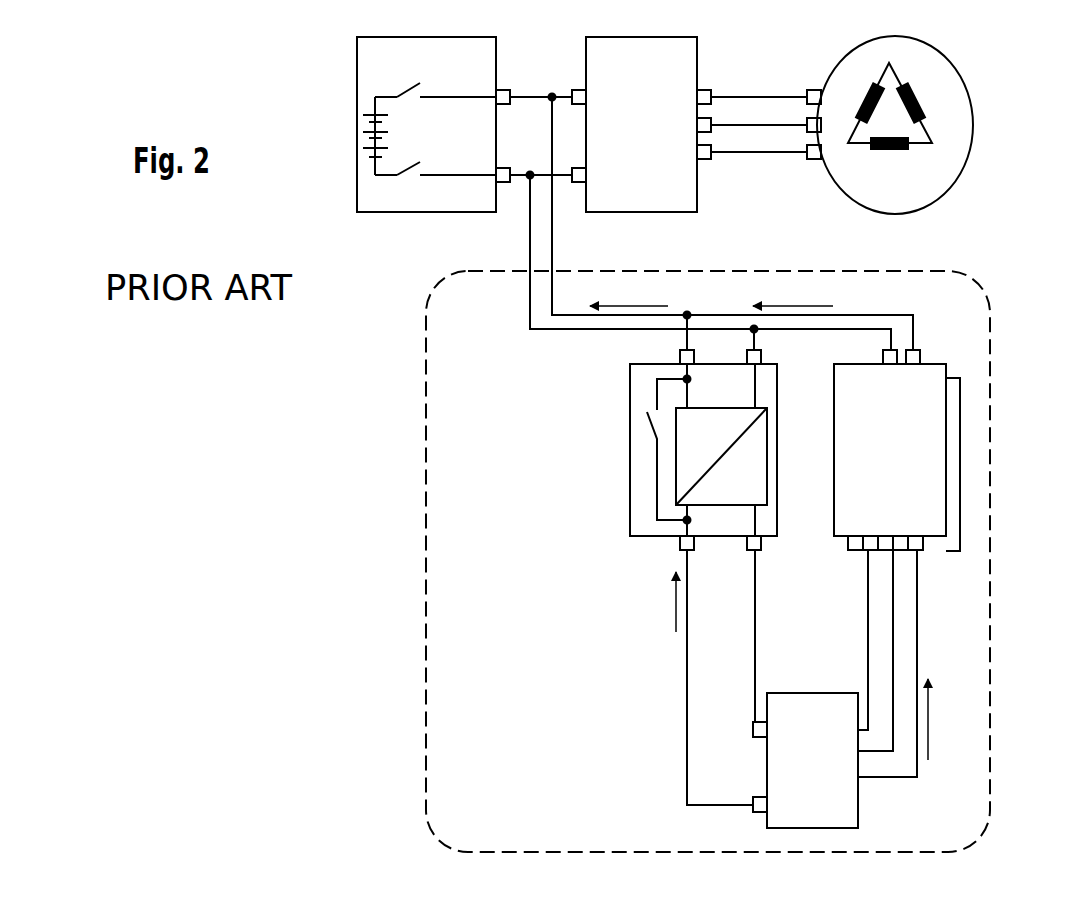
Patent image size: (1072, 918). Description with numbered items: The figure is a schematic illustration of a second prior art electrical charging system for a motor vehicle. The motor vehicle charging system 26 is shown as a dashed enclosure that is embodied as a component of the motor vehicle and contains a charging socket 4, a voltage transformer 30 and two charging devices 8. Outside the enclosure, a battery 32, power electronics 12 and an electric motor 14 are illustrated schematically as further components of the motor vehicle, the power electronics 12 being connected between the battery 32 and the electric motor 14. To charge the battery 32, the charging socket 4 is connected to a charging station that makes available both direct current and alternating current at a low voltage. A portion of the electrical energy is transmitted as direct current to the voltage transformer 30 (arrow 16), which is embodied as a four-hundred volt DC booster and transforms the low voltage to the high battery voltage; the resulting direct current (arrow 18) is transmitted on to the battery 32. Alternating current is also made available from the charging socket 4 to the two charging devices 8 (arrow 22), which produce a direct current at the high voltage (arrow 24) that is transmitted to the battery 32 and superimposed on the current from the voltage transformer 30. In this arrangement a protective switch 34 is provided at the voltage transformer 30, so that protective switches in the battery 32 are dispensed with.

The charging socket 4 is at (858, 812).
The charging devices 8 is at (834, 480).
The power electronics 12 is at (665, 212).
The electric motor 14 is at (957, 177).
The arrow 16 is at (676, 598).
The arrow 18 is at (628, 306).
The arrow 22 is at (928, 708).
The arrow 24 is at (790, 300).
The motor vehicle charging system 26 is at (947, 271).
The voltage transformer 30 is at (630, 510).
The battery 32 is at (378, 212).
The protective switch 34 is at (637, 440).